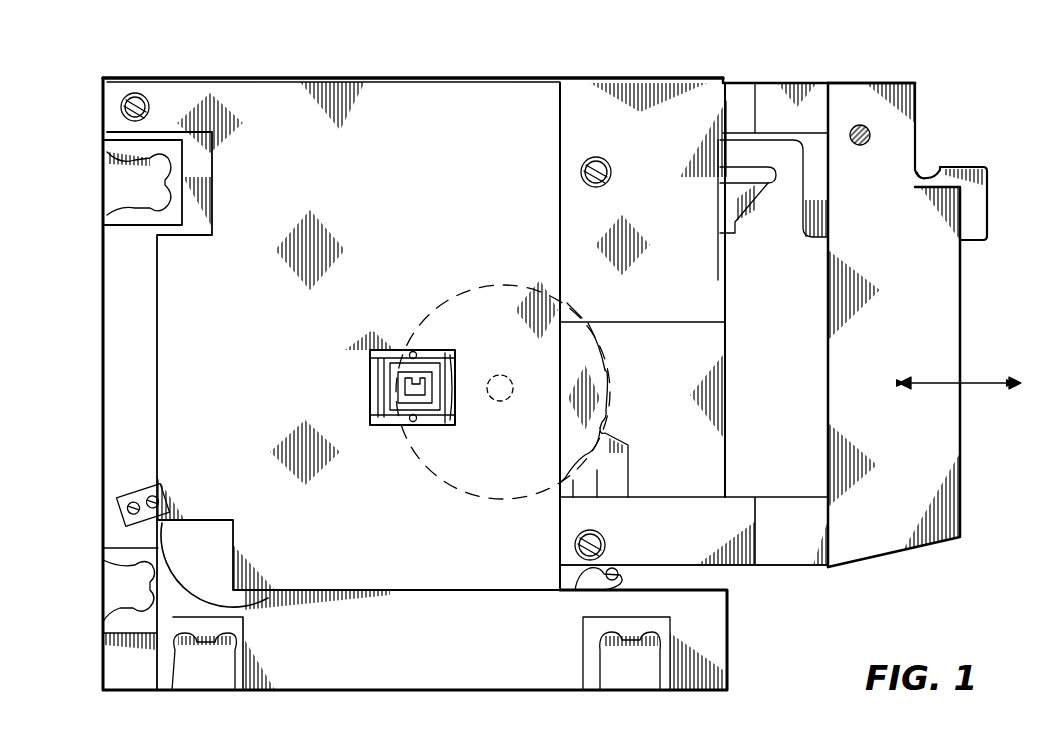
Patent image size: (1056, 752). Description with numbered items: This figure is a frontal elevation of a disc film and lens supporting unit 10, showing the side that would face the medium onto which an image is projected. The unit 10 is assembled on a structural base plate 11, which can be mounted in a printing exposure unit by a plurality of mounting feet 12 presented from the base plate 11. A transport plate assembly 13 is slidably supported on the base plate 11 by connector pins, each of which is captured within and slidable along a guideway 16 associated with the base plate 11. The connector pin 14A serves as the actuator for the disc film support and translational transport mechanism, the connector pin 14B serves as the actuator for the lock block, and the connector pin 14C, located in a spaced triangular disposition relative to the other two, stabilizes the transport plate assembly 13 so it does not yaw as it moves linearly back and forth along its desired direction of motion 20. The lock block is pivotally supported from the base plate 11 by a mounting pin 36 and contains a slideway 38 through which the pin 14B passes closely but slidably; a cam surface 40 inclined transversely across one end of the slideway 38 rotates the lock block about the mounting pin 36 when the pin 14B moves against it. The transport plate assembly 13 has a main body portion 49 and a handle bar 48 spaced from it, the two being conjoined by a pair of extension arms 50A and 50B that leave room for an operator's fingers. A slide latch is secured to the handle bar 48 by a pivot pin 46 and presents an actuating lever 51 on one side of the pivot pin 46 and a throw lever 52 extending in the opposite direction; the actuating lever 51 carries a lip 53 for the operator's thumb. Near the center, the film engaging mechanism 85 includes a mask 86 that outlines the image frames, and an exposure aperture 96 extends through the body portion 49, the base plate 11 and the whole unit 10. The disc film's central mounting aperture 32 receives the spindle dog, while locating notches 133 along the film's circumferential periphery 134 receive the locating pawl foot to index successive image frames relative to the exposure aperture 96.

The disc film and lens supporting unit 10 is at (985, 60).
The structural base plate 11 is at (103, 432).
The mounting feet 12 is at (115, 215).
The transport plate assembly 13 is at (498, 58).
The connector pin 14A is at (607, 165).
The connector pin 14B is at (603, 540).
The connector pin 14C is at (137, 93).
The guideway 16 is at (772, 210).
The direction of motion 20 is at (990, 392).
The central mounting aperture 32 is at (508, 372).
The mounting pin 36 is at (624, 578).
The slideway 38 is at (597, 470).
The cam surface 40 is at (590, 580).
The pivot pin 46 is at (870, 140).
The handle bar 48 is at (962, 305).
The main body portion 49 is at (290, 82).
The extension arm 50A is at (815, 83).
The extension arm 50B is at (790, 568).
The actuating lever 51 is at (925, 165).
The throw lever 52 is at (765, 130).
The lip 53 is at (978, 166).
The film engaging mechanism 85 is at (386, 424).
The mask 86 is at (385, 398).
The exposure aperture 96 is at (440, 395).
The locating notches 133 is at (608, 376).
The circumferential periphery 134 is at (605, 343).